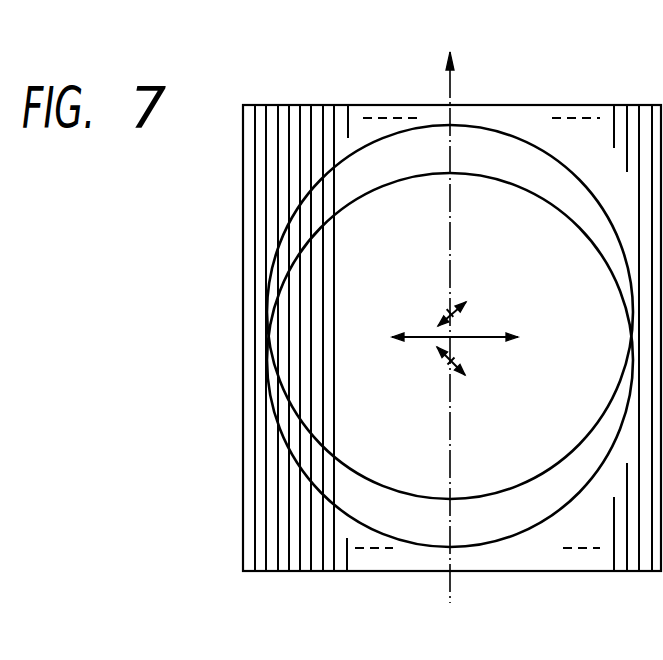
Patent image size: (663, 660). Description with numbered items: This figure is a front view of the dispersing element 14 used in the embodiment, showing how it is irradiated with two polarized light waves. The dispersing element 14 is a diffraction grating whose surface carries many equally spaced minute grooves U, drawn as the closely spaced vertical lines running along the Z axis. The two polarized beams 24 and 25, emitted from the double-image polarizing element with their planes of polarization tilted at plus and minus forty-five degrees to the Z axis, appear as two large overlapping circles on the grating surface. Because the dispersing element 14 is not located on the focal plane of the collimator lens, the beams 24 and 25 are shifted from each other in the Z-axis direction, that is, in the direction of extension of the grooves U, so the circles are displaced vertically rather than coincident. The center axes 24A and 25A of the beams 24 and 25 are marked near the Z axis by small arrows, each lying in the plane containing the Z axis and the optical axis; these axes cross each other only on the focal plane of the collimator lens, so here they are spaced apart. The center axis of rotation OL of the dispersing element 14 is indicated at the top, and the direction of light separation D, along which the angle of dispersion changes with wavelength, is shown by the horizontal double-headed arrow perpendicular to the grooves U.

The diffraction grating 14 is at (598, 567).
The grooves U is at (312, 572).
The polarized beam 24 is at (502, 128).
The polarized beam 25 is at (513, 540).
The Z axis Z is at (451, 312).
The center axis of rotation OL is at (445, 68).
The direction of light separation D is at (488, 337).
The center axis 24A is at (460, 318).
The center axis 25A is at (447, 360).